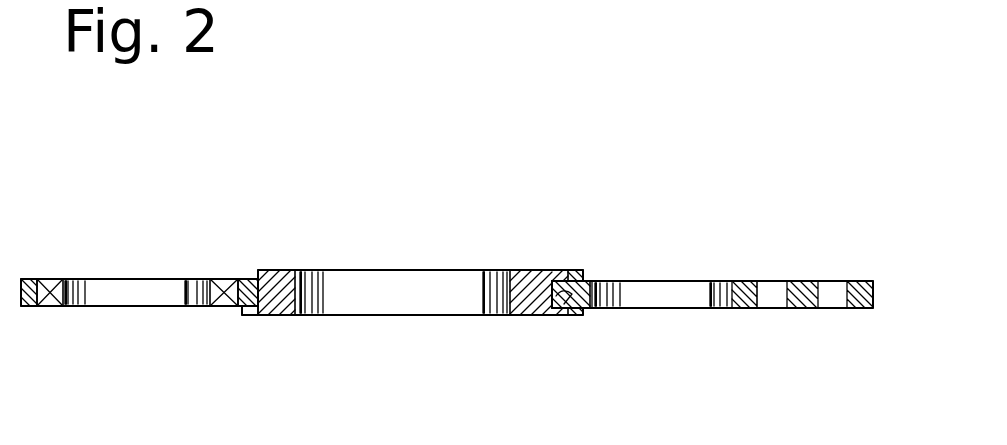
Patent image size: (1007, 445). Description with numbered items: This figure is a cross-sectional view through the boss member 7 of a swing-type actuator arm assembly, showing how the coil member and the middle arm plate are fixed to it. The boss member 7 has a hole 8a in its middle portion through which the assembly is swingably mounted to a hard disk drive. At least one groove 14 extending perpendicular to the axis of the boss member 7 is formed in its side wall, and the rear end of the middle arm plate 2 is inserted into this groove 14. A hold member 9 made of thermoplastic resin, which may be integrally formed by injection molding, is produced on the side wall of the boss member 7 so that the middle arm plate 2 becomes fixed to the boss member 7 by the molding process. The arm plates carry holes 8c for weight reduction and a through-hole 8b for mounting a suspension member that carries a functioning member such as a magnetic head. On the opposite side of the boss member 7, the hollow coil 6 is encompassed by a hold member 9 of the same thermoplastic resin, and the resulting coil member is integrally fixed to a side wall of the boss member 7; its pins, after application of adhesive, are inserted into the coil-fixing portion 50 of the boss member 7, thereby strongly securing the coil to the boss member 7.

The middle arm plate 2 is at (806, 309).
The hollow coil 6 is at (53, 279).
The boss member 7 is at (278, 312).
The hole 8a is at (402, 278).
The through-hole 8b is at (830, 282).
The holes 8c is at (770, 282).
The hold member 9 is at (28, 307).
The groove 14 is at (568, 310).
The coil-fixing portion 50 is at (243, 314).